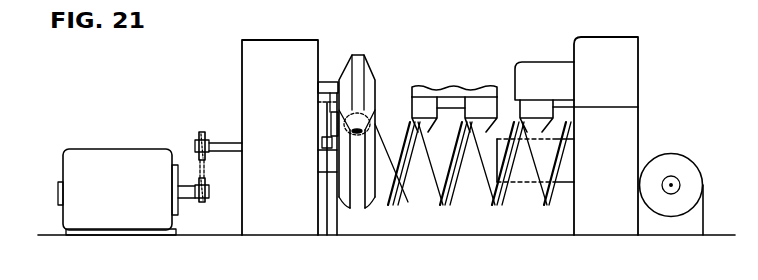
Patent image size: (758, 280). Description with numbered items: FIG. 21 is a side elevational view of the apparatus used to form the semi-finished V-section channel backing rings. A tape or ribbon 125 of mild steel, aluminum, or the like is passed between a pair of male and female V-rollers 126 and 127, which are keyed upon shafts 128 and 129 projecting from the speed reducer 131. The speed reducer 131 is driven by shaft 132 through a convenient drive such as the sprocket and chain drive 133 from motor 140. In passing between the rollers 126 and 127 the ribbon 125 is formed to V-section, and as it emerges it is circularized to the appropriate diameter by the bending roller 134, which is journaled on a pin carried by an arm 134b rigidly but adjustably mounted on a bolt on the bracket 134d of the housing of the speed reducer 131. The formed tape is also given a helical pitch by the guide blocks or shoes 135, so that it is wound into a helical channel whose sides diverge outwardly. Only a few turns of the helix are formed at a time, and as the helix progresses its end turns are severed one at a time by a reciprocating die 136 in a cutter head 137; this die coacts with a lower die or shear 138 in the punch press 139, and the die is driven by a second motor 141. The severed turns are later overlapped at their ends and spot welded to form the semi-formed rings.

The ribbon 125 is at (486, 199).
The male V-roller 126 is at (354, 57).
The female V-roller 127 is at (368, 209).
The shaft 128 is at (327, 82).
The shaft 129 is at (328, 207).
The speed reducer 131 is at (242, 52).
The shaft 132 is at (224, 142).
The sprocket and chain drive 133 is at (205, 180).
The bending roller 134 is at (370, 116).
The arm 134b is at (333, 128).
The bracket 134d is at (325, 143).
The guide blocks 135 is at (470, 105).
The reciprocating die 136 is at (638, 107).
The cutter head 137 is at (542, 62).
The lower die 138 is at (553, 177).
The punch press 139 is at (638, 52).
The motor 140 is at (118, 192).
The motor 141 is at (698, 166).